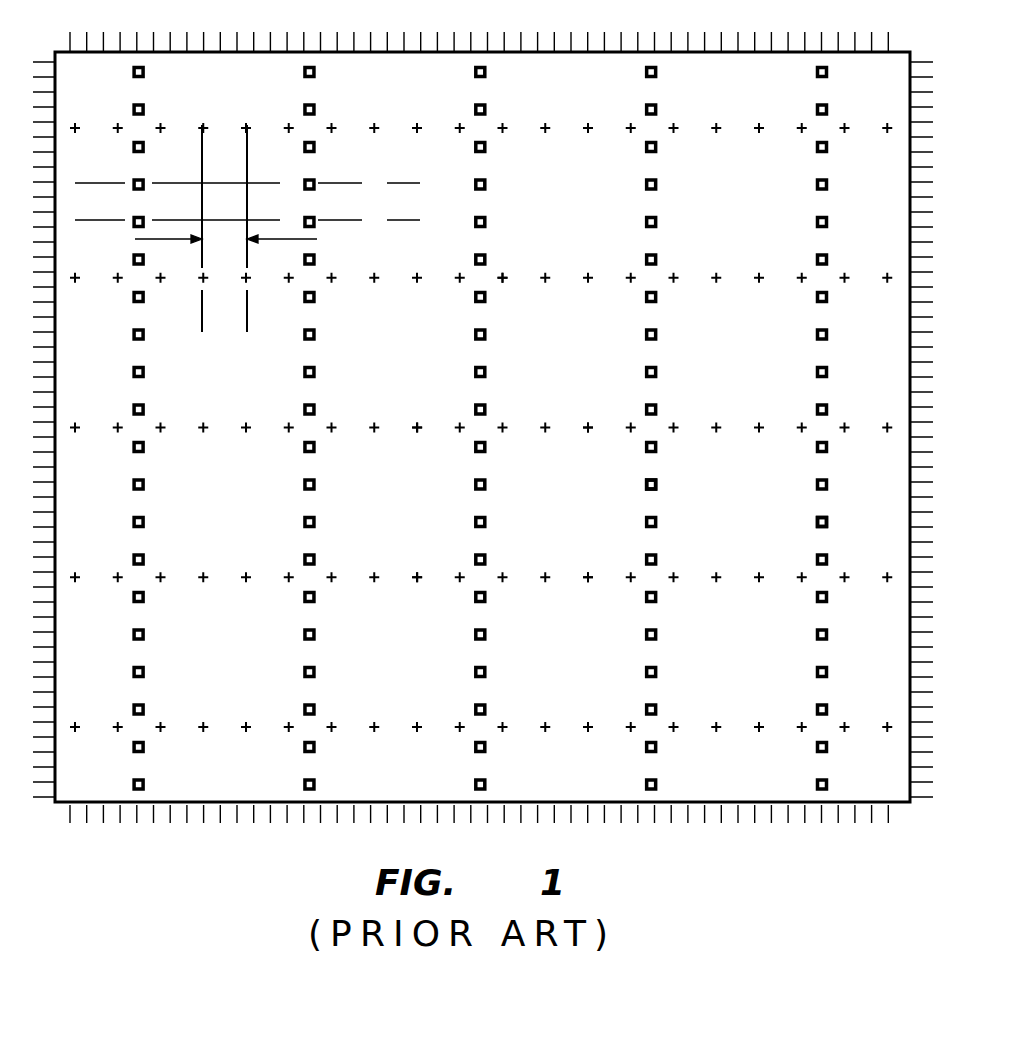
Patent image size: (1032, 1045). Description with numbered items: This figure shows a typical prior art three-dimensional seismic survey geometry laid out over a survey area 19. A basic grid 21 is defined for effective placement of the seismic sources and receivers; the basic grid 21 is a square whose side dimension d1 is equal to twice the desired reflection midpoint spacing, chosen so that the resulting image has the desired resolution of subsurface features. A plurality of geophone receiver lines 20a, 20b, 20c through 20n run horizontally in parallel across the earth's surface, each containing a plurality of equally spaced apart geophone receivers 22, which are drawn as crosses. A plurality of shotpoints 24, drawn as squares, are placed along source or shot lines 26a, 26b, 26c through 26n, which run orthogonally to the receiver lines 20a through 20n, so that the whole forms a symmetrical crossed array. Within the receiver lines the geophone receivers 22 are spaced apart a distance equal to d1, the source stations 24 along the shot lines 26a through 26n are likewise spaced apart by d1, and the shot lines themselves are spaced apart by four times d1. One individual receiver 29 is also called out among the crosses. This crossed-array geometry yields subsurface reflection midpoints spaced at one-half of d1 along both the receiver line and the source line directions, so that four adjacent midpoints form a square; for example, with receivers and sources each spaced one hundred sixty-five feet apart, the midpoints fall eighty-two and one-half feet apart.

The semiconductor wafer / substrate 19 is at (912, 310).
The geophone receiver line 20n is at (862, 127).
The geophone receiver line 20c is at (868, 422).
The geophone receiver line 20b is at (868, 572).
The geophone receiver line 20a is at (868, 722).
The shot line 26n is at (140, 94).
The shot line 26c is at (481, 84).
The shot line 26b is at (651, 84).
The shot line 26a is at (819, 84).
The basic grid 21 is at (257, 176).
The geophone receiver 22 is at (416, 424).
The shotpoint 24 is at (660, 484).
The cross-shaped alignment mark 29 is at (484, 277).
The grid dimension d1 is at (226, 242).